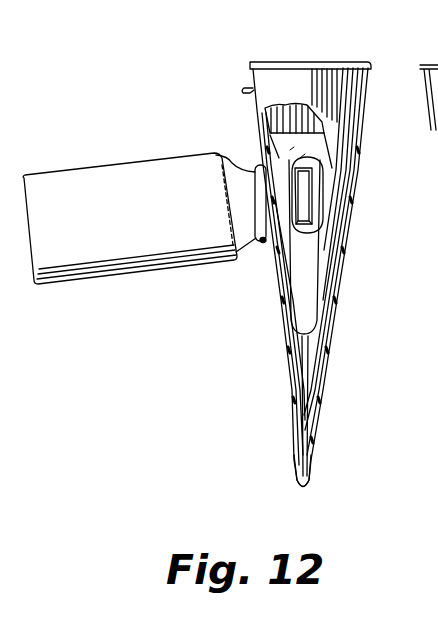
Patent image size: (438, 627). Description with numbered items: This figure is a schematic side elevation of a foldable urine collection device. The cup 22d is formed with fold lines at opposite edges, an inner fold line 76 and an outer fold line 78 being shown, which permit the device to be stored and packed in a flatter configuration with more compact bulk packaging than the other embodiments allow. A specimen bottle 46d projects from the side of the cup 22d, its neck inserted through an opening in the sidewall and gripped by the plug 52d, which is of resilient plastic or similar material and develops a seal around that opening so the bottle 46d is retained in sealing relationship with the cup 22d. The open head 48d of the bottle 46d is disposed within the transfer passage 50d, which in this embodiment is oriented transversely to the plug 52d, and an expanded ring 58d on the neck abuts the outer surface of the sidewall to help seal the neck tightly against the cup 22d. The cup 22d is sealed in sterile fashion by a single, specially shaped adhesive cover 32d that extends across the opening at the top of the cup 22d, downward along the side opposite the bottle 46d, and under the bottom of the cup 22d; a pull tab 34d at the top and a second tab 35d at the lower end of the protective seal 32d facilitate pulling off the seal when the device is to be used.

The cup 22d is at (257, 123).
The pull tab 34d is at (245, 91).
The adhesive cover 32d is at (307, 62).
The outer fold line 78 is at (311, 90).
The plug 52d is at (315, 277).
The transfer passage 50d is at (313, 173).
The open head 48d is at (313, 202).
The inner fold line 76 is at (308, 408).
The second tab 35d is at (300, 447).
The expanded ring 58d is at (263, 240).
The specimen bottle 46d is at (68, 172).